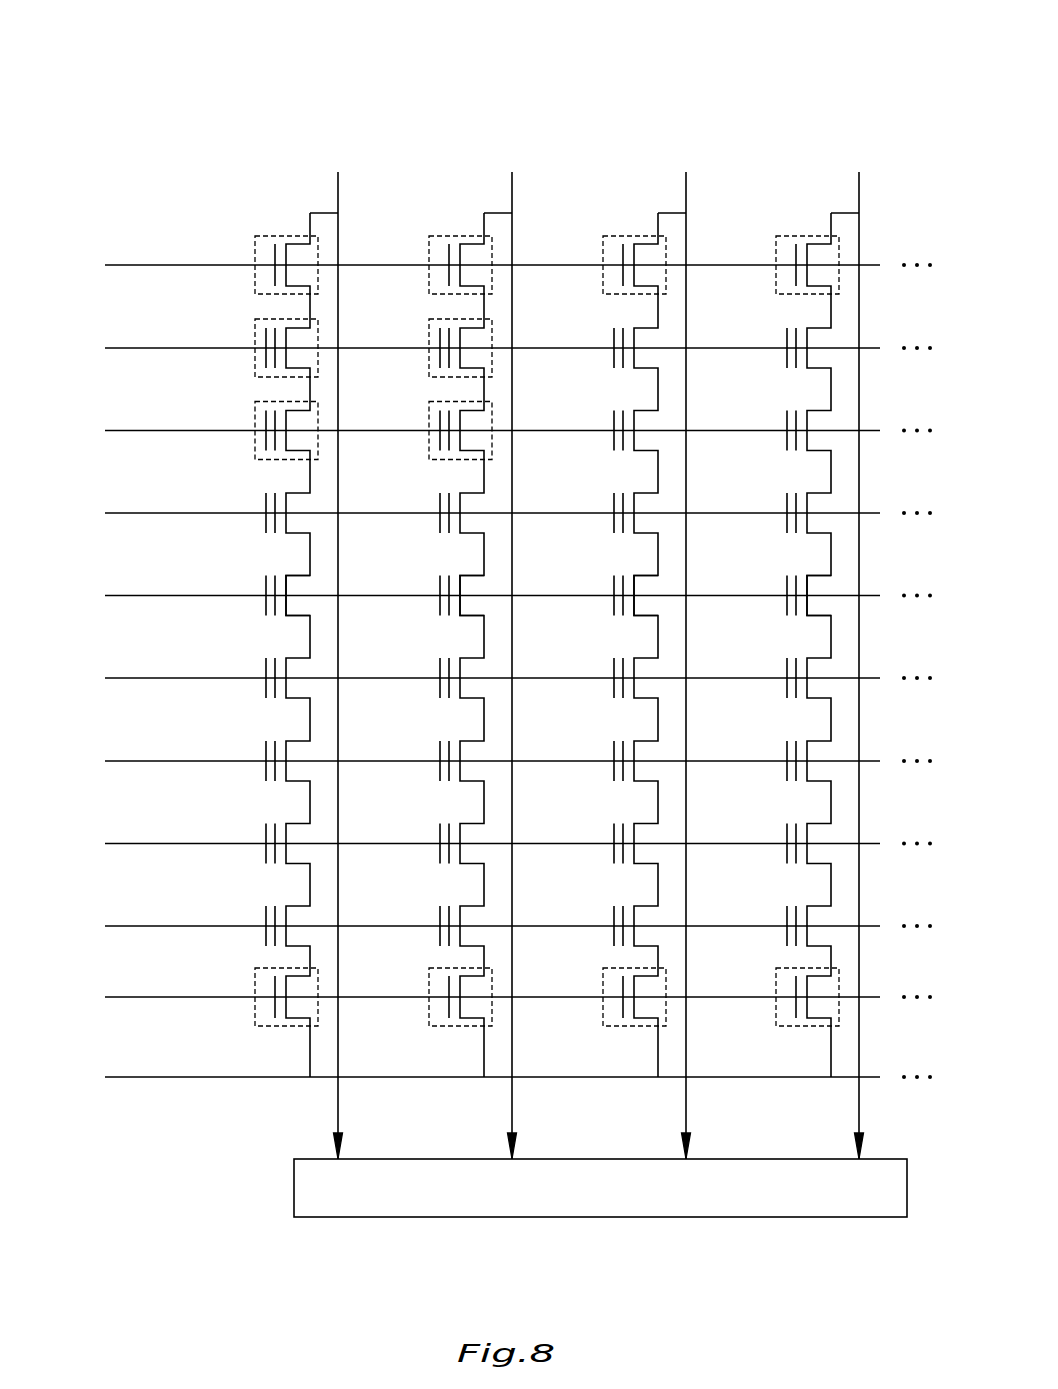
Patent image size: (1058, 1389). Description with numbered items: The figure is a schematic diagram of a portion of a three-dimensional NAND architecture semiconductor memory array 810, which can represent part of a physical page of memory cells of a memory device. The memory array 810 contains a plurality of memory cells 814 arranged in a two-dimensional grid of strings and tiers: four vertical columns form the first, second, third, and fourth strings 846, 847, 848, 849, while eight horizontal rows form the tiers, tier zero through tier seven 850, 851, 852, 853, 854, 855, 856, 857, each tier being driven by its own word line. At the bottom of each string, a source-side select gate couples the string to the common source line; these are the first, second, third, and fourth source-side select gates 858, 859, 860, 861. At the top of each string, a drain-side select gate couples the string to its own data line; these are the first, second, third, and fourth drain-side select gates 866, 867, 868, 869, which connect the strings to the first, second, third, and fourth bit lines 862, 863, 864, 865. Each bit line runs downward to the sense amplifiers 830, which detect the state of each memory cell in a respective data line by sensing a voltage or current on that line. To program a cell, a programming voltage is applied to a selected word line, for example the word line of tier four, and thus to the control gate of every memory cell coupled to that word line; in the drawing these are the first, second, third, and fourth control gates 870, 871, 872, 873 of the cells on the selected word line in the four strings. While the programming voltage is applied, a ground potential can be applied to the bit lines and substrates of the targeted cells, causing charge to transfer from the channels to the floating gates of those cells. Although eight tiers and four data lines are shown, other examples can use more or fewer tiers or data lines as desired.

The memory array 810 is at (880, 16).
The memory cells 814 is at (310, 340).
The sense amplifiers 830 is at (598, 1217).
The first string 846 is at (280, 174).
The second string 847 is at (454, 174).
The third string 848 is at (628, 174).
The fourth string 849 is at (801, 174).
The tier TIER0 850 is at (200, 872).
The tier TIER1 851 is at (200, 789).
The tier TIER2 852 is at (200, 706).
The tier TIER3 853 is at (200, 624).
The tier TIER4 854 is at (200, 541).
The tier TIER5 855 is at (200, 458).
The tier TIER6 856 is at (200, 376).
The tier TIER7 857 is at (200, 293).
The first source-side select gate 858 is at (310, 988).
The second source-side select gate 859 is at (484, 988).
The third source-side select gate 860 is at (658, 988).
The fourth source-side select gate 861 is at (831, 988).
The first bit line 862 is at (339, 183).
The second bit line 863 is at (513, 183).
The third bit line 864 is at (687, 183).
The fourth bit line 865 is at (860, 183).
The first drain-side select gate 866 is at (310, 257).
The second drain-side select gate 867 is at (484, 257).
The third drain-side select gate 868 is at (658, 257).
The fourth drain-side select gate 869 is at (831, 257).
The first control gate 870 is at (265, 583).
The second control gate 871 is at (439, 583).
The third control gate 872 is at (613, 583).
The fourth control gate 873 is at (786, 583).